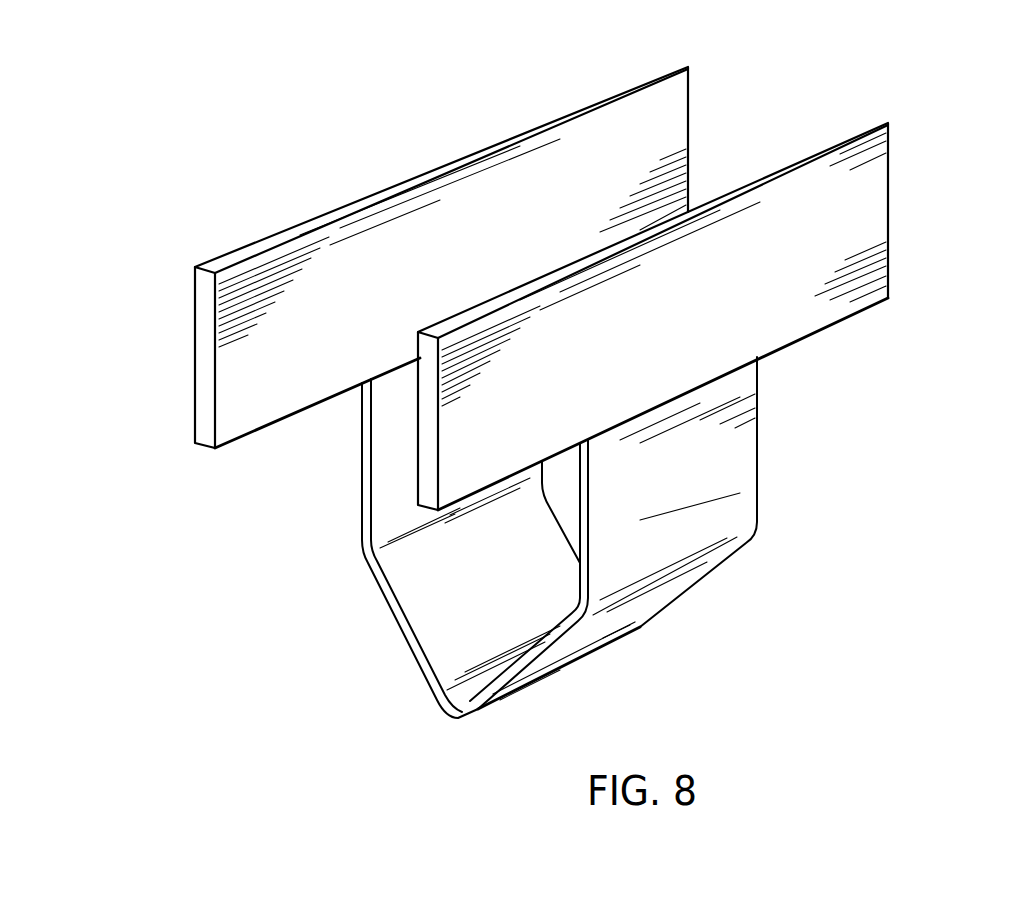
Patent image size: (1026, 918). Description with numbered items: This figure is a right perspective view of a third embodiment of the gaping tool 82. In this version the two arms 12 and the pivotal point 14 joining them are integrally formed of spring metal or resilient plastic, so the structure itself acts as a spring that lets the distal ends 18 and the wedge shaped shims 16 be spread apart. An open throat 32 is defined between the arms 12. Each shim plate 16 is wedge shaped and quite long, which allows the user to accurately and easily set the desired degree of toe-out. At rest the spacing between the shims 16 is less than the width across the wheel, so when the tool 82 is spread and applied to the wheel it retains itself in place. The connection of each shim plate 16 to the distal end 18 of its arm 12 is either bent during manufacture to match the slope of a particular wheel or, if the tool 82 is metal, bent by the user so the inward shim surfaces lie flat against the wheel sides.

The tool 82 is at (205, 162).
The wedge shaped shim 16 is at (457, 160).
The distal end 18 is at (357, 395).
The arm 12 is at (361, 484).
The open throat 32 is at (477, 537).
The pivotal point 14 is at (450, 718).